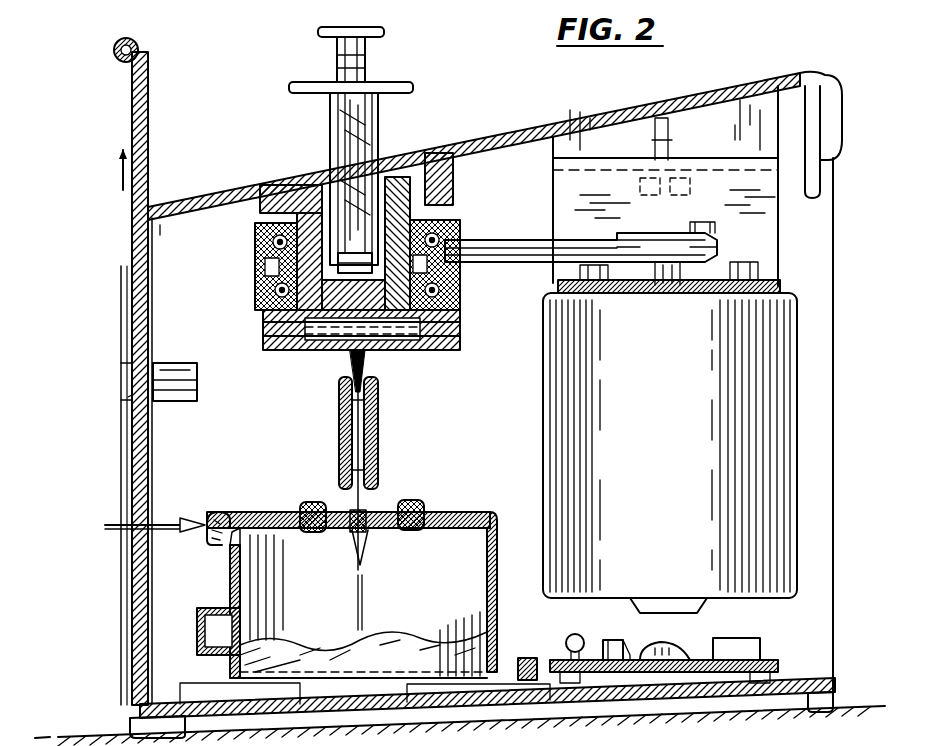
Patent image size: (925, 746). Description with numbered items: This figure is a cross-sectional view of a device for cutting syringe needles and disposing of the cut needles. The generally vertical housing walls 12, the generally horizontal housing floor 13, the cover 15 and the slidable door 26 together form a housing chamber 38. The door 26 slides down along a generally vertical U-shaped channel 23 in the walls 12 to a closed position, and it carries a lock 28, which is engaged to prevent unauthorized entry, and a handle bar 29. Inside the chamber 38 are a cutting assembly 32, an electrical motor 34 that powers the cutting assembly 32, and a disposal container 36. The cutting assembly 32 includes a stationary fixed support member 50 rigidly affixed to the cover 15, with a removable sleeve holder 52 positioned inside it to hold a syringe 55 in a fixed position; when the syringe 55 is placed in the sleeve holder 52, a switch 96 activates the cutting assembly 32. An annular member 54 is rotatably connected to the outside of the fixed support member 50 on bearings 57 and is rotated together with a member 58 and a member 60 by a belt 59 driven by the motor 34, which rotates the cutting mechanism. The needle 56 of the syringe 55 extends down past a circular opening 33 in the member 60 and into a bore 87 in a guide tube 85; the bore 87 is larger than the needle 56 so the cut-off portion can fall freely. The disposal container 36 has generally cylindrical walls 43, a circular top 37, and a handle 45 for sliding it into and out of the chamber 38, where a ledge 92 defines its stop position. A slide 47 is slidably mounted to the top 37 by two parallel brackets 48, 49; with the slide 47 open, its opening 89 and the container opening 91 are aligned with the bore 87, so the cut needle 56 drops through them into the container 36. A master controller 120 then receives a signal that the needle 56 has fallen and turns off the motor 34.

The housing walls 12 is at (822, 270).
The housing floor 13 is at (800, 672).
The cover 15 is at (207, 200).
The U-shaped channel 23 is at (147, 640).
The slidable door 26 is at (132, 116).
The lock 28 is at (172, 362).
The handle bar 29 is at (113, 57).
The cutting assembly 32 is at (278, 362).
The circular opening 33 is at (368, 350).
The electrical motor 34 is at (750, 395).
The disposal container 36 is at (205, 572).
The circular top 37 is at (476, 512).
The housing chamber 38 is at (190, 240).
The cylindrical walls 43 is at (497, 556).
The handle 45 is at (197, 625).
The slide 47 is at (222, 512).
The bracket 48 is at (314, 504).
The bracket 49 is at (425, 505).
The fixed support member 50 is at (453, 172).
The sleeve holder 52 is at (398, 178).
The annular member 54 is at (452, 222).
The syringe 55 is at (373, 55).
The needle 56 is at (356, 375).
The bearings 57 is at (460, 290).
The member 58 is at (460, 316).
The belt 59 is at (545, 240).
The member 60 is at (460, 336).
The guide tube 85 is at (339, 448).
The bore 87 is at (358, 418).
The opening 89 is at (370, 518).
The opening 91 is at (372, 528).
The ledge 92 is at (527, 658).
The switch 96 is at (262, 330).
The master controller 120 is at (758, 645).